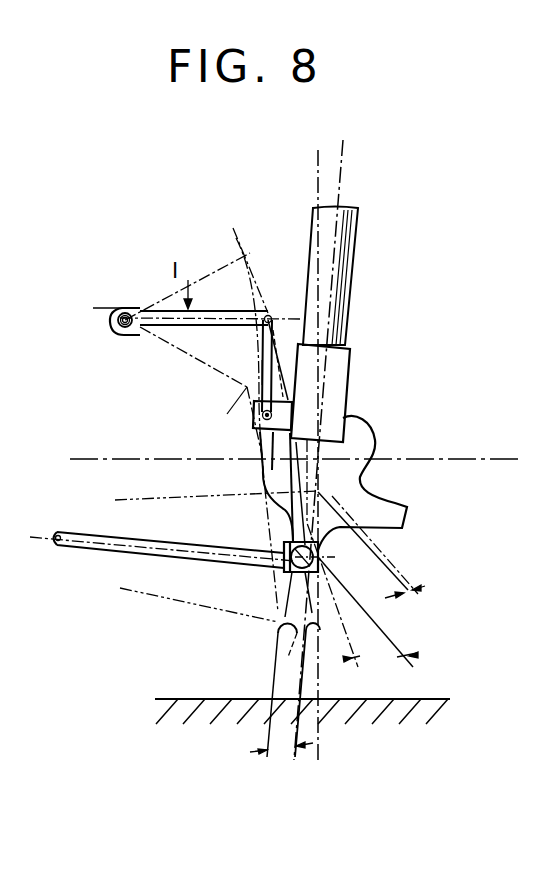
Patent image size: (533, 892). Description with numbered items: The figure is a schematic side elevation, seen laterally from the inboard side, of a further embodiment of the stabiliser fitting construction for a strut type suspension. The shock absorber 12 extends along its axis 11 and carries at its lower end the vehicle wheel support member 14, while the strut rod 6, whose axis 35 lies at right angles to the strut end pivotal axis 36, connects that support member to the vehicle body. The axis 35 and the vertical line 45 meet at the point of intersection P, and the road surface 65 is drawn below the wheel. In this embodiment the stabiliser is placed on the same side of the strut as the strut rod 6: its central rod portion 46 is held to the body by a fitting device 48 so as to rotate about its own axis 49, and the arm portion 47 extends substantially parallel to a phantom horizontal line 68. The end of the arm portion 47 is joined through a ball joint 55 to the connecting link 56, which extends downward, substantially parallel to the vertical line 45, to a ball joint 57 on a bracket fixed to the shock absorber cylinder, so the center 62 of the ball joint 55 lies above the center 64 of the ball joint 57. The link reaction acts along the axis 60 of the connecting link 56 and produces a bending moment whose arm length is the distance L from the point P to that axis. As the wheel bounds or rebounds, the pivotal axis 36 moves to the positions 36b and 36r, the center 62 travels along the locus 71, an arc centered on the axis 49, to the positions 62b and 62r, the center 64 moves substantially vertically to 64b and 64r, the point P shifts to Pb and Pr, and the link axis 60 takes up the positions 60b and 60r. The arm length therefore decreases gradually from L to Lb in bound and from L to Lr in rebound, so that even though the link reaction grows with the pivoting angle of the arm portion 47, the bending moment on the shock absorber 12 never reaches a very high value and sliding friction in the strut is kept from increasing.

The strut rod 6 is at (108, 548).
The axis of the shock absorber 11 is at (340, 183).
The shock absorber 12 is at (352, 268).
The vehicle wheel support member 14 is at (350, 418).
The axis of the strut rod 35 is at (48, 534).
The pivotal axis 36 is at (290, 571).
The pivotal axis in maximum bound position 36b is at (268, 505).
The pivotal axis in maximum rebound position 36r is at (277, 626).
The vertical line 45 is at (320, 759).
The central rod portion 46 is at (113, 328).
The arm portion 47 is at (167, 332).
The fitting device 48 is at (100, 308).
The axis of the central rod portion 49 is at (122, 312).
The ball joint 55 is at (285, 322).
The connecting link 56 is at (262, 372).
The ball joint 57 is at (247, 396).
The axis of the connecting link 60 is at (260, 353).
The axis of the connecting link in bound position 60b is at (240, 272).
The axis of the connecting link in rebound position 60r is at (258, 452).
The center of the ball joint 62 is at (272, 315).
The center of the ball joint in bound position 62b is at (250, 252).
The center of the ball joint in rebound position 62r is at (246, 388).
The center of the ball joint 64 is at (255, 418).
The center of the ball joint in bound position 64b is at (300, 348).
The center of the ball joint in rebound position 64r is at (262, 481).
The road surface 65 is at (173, 697).
The phantom horizontal line 68 is at (505, 458).
The locus 71 is at (236, 250).
The point of intersection P is at (354, 608).
The point of intersection in bound position Pb is at (319, 493).
The point of intersection in rebound position Pr is at (320, 615).
The arm length of the bending moment L is at (380, 661).
The arm length in bound position Lb is at (409, 604).
The arm length in rebound position Lr is at (280, 751).